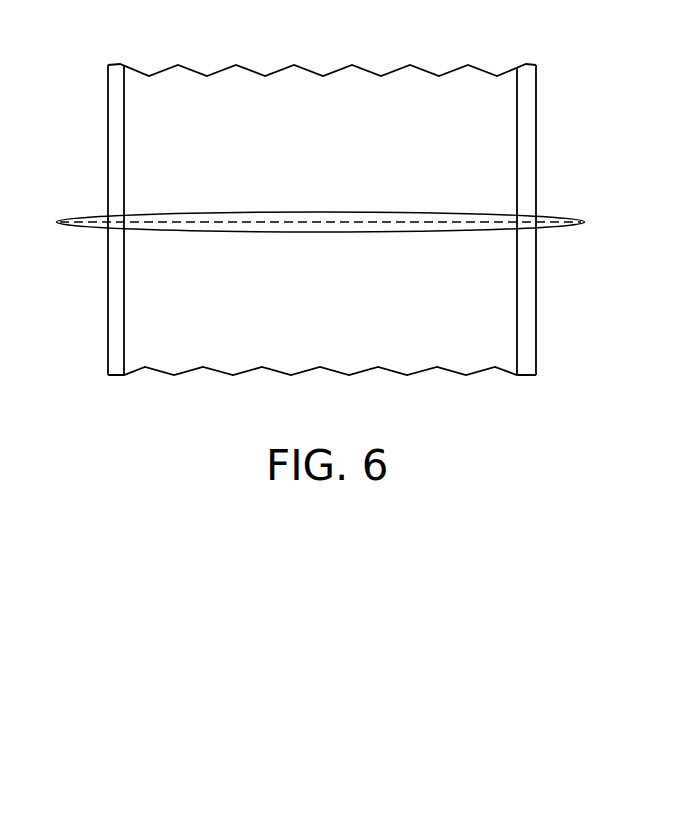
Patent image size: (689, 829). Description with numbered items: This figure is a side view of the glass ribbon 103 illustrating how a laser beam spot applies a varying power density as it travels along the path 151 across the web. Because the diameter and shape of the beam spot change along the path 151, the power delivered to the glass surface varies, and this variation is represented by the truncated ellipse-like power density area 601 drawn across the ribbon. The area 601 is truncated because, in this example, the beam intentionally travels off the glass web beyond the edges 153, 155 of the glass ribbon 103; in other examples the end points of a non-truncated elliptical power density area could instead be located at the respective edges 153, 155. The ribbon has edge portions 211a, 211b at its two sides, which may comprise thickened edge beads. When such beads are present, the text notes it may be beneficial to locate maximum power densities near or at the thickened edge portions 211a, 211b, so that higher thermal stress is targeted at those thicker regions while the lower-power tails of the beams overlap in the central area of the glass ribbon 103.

The glass ribbon 103 is at (351, 266).
The path 151 is at (280, 222).
The edge 153 is at (108, 273).
The edge 155 is at (536, 358).
The truncated ellipse-like power density area 601 is at (168, 212).
The edge portion 211a is at (69, 267).
The edge portion 211b is at (602, 228).